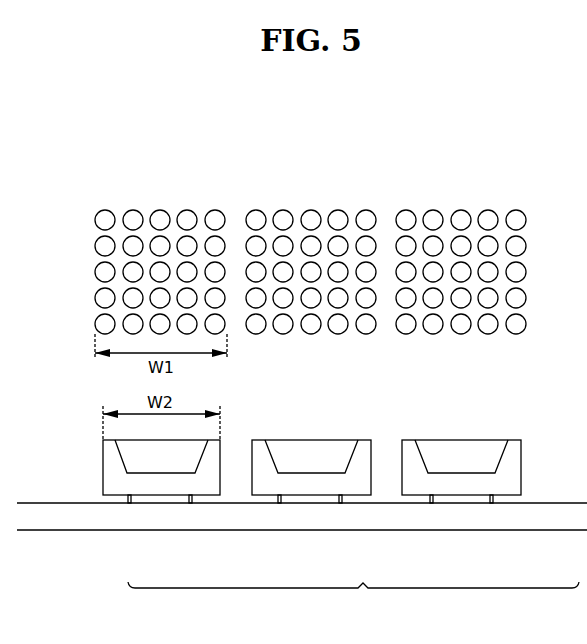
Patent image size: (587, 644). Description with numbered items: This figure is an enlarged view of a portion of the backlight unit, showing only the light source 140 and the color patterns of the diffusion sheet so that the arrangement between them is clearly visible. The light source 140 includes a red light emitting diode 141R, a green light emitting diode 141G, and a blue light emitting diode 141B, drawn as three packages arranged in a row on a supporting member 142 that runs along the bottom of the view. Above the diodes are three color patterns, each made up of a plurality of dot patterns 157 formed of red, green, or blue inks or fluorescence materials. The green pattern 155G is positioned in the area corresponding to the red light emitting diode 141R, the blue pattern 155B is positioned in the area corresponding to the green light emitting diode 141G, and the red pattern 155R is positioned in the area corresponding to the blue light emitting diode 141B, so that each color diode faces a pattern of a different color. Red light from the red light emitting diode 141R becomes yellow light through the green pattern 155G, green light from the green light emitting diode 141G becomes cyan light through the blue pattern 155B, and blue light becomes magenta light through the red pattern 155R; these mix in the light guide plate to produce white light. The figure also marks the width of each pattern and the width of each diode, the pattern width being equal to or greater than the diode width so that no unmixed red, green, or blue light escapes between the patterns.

The green pattern 155G is at (155, 197).
The blue pattern 155B is at (303, 197).
The red pattern 155R is at (447, 197).
The dot pattern 157 is at (105, 221).
The red light emitting diode 141R is at (157, 495).
The green light emitting diode 141G is at (311, 495).
The blue light emitting diode 141B is at (461, 495).
The substrate 142 is at (554, 510).
The light source 140 is at (353, 599).